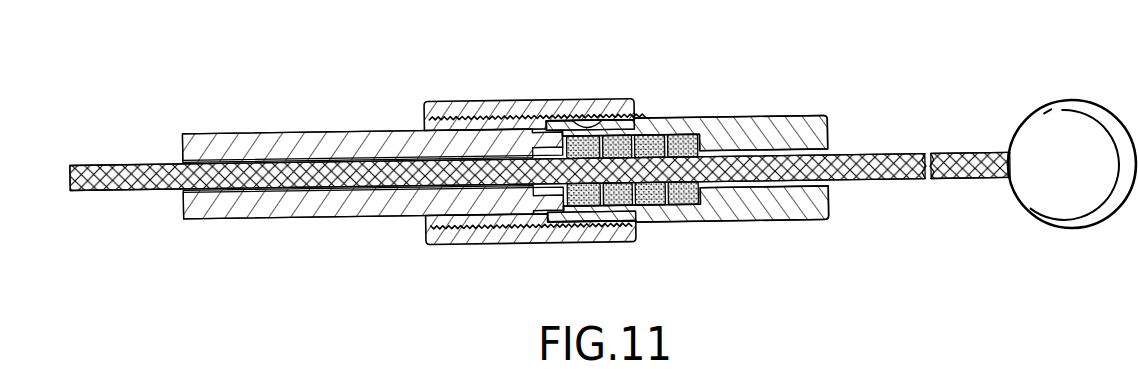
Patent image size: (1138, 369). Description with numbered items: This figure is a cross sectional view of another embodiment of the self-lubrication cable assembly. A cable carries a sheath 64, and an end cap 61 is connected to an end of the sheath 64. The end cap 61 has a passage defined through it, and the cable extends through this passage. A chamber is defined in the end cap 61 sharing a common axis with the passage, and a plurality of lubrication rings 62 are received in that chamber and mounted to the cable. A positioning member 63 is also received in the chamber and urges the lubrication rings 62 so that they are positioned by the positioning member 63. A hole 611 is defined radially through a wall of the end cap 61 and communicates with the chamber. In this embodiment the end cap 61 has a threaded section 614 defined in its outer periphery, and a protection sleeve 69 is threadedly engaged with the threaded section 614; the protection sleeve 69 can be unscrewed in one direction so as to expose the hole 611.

The end cap 61 is at (748, 117).
The hole 611 is at (602, 101).
The threaded section 614 is at (493, 221).
The lubrication rings 62 is at (679, 201).
The positioning member 63 is at (563, 221).
The sheath 64 is at (312, 218).
The protection sleeve 69 is at (570, 98).